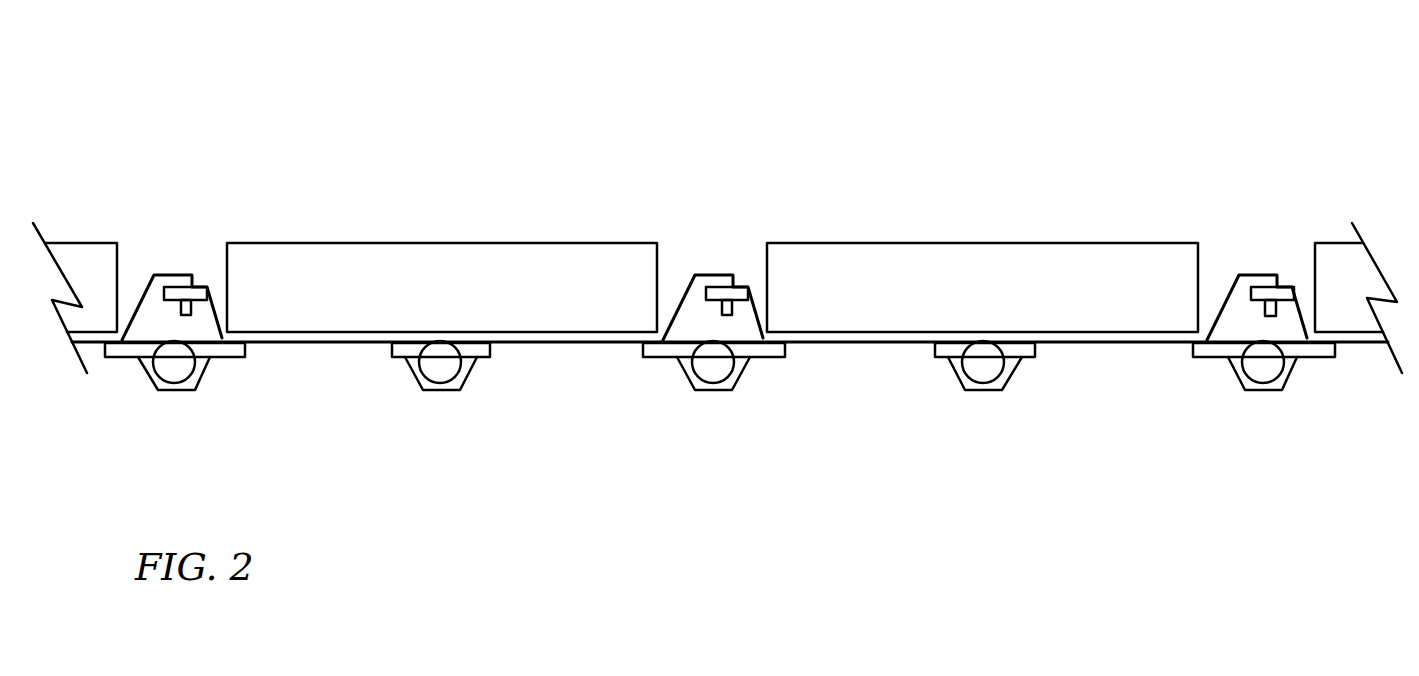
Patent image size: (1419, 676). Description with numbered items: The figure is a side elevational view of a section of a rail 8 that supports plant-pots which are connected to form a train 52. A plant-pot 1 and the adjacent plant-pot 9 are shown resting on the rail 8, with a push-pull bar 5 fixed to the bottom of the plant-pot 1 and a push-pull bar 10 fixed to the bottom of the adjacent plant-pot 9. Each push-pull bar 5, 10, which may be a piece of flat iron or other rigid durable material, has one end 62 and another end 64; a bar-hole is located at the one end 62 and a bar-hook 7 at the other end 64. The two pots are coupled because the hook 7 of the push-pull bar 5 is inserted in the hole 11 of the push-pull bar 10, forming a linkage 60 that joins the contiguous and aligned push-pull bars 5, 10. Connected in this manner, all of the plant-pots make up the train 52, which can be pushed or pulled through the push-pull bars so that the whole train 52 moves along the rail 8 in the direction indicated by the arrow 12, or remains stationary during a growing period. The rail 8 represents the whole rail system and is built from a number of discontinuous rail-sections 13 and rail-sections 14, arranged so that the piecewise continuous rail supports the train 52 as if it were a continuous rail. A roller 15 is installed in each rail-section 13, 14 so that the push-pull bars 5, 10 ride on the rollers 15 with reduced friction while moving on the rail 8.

The plant-pot 1 is at (550, 243).
The push-pull bar 5 is at (290, 343).
The bar-hook 7 is at (710, 273).
The rail 8 is at (738, 436).
The adjacent plant-pot 9 is at (1083, 243).
The push-pull bar 10 is at (857, 345).
The hole 11 is at (742, 276).
The arrow 12 is at (117, 198).
The rail-section 13 is at (485, 358).
The rail-section 14 is at (658, 358).
The roller 15 is at (1002, 380).
The train 52 is at (1036, 50).
The linkage 60 is at (718, 241).
The one end 62 is at (280, 140).
The other end 64 is at (614, 139).